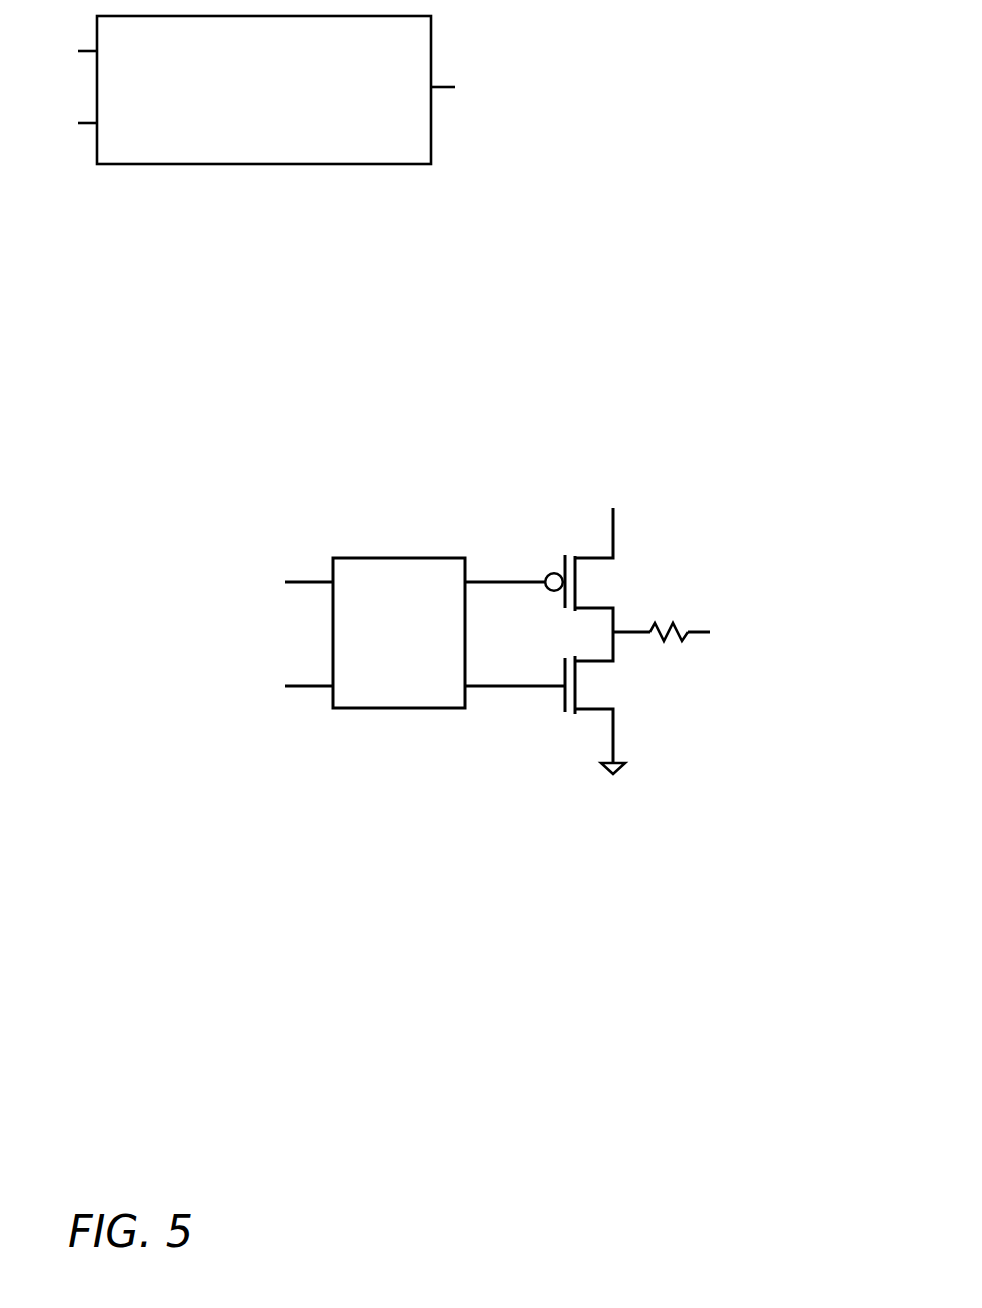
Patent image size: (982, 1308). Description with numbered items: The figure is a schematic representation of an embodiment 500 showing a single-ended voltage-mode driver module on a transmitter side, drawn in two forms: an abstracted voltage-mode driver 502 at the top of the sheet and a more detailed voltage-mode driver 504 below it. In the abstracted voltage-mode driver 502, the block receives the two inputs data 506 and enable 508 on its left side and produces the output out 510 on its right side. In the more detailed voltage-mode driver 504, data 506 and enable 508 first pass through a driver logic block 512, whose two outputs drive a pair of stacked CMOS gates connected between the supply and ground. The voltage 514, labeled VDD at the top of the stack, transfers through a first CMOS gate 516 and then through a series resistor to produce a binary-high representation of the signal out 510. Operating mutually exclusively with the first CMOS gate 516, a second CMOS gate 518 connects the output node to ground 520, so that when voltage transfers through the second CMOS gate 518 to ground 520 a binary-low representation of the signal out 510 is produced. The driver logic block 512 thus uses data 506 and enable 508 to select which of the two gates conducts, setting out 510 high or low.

The embodiment 500 is at (117, 1088).
The abstracted voltage-mode driver 502 is at (533, 170).
The voltage-mode driver 504 is at (737, 735).
The data 506 is at (185, 315).
The enable 508 is at (185, 417).
The out 510 is at (757, 672).
The driver logic block 512 is at (400, 708).
The voltage 514 is at (687, 504).
The first CMOS gate 516 is at (528, 581).
The second CMOS gate 518 is at (562, 715).
The ground 520 is at (613, 775).